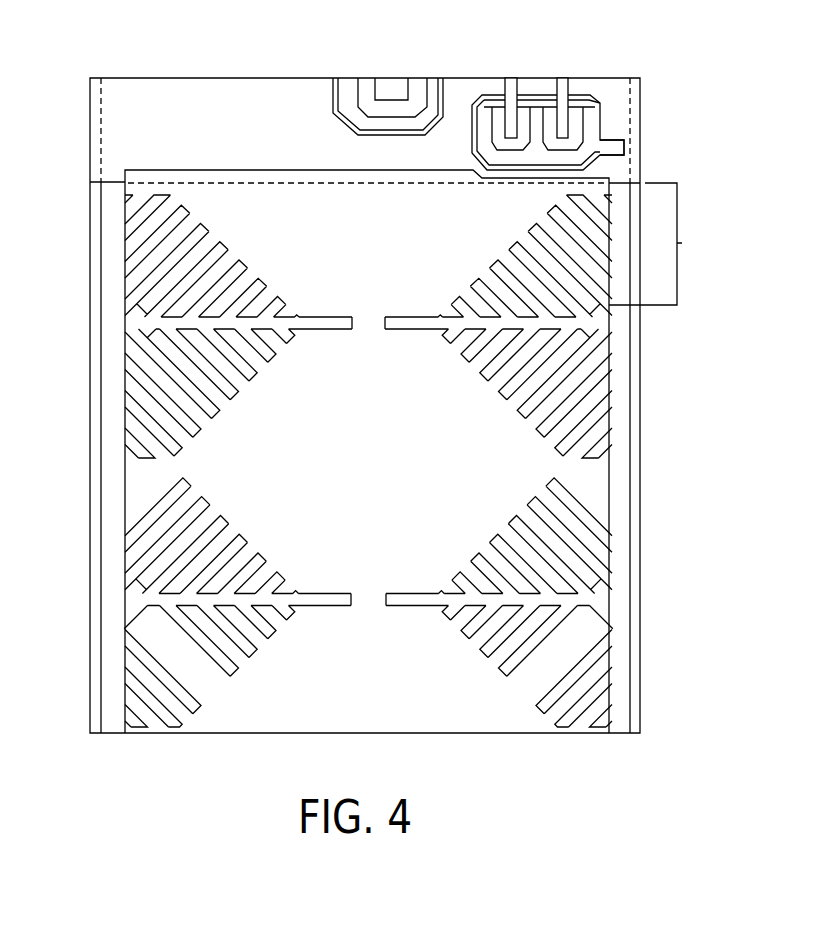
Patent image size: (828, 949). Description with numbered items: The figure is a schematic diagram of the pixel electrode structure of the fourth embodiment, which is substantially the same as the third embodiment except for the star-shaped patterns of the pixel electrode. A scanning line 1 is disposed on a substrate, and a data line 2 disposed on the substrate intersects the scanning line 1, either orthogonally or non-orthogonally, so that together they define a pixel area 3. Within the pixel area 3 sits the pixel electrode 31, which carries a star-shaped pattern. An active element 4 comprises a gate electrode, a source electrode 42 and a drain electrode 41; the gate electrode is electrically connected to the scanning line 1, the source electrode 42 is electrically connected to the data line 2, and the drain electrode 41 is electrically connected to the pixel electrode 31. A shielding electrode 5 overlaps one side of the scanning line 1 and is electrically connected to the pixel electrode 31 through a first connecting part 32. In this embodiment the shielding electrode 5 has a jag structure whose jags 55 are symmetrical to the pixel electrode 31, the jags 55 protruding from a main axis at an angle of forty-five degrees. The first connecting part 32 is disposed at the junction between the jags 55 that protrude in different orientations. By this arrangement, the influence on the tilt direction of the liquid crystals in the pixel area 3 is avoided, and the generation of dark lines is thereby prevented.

The scanning line 1 is at (248, 102).
The data line 2 is at (90, 292).
The pixel area 3 is at (125, 642).
The pixel electrode 31 is at (143, 470).
The first connecting part 32 is at (368, 332).
The active element 4 is at (597, 95).
The drain electrode 41 is at (562, 78).
The source electrode 42 is at (624, 147).
The shielding electrode 5 is at (654, 244).
The jags 55 is at (592, 287).